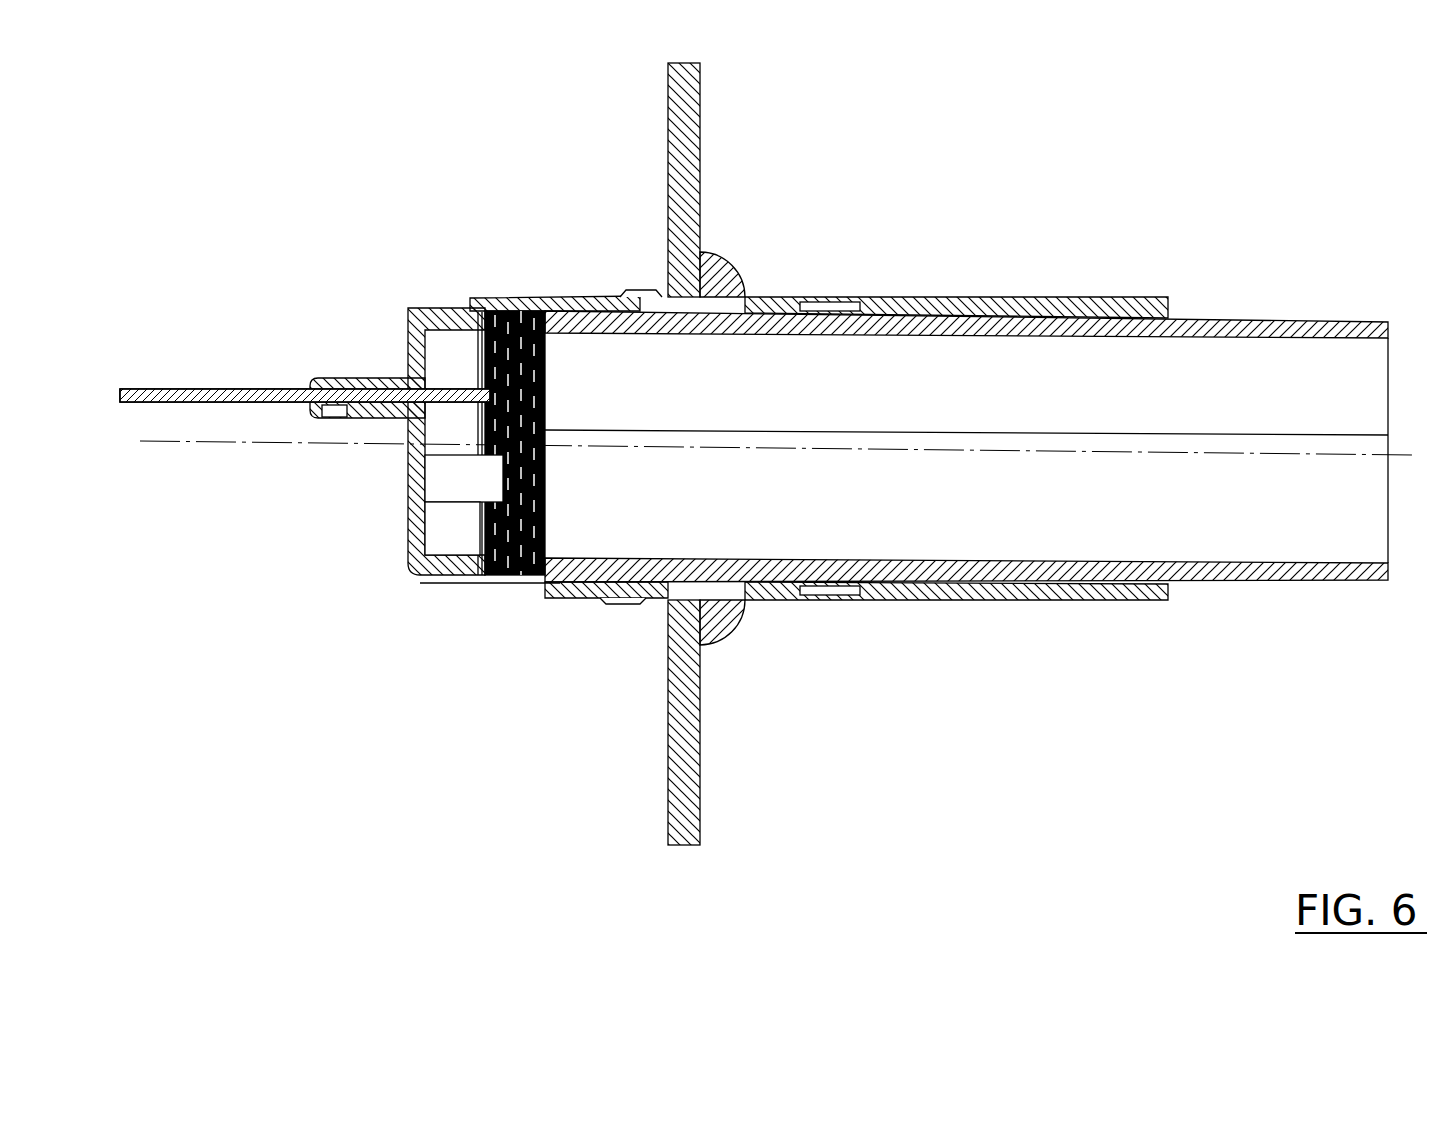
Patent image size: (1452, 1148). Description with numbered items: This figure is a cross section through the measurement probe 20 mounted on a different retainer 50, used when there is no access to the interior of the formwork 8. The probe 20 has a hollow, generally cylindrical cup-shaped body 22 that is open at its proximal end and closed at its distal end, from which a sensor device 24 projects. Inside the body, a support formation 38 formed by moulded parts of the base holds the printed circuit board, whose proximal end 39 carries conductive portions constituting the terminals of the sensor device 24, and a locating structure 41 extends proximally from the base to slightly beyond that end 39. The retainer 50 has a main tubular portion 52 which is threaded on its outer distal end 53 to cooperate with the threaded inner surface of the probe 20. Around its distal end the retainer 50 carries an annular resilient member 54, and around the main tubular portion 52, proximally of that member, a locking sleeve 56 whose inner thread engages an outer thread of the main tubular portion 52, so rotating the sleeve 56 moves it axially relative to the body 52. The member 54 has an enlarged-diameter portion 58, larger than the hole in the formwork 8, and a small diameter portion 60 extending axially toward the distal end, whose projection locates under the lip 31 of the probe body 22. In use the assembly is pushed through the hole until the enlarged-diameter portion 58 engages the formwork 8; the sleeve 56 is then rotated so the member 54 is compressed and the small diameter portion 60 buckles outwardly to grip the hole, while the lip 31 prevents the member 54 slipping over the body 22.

The formwork 8 is at (668, 150).
The measurement probe 20 is at (447, 302).
The cup-shaped body 22 is at (474, 305).
The sensor device 24 is at (200, 388).
The lip 31 is at (632, 604).
The support formation 38 is at (370, 382).
The proximal end 39 is at (410, 432).
The locating structure 41 is at (440, 486).
The retainer 50 is at (1113, 277).
The main tubular portion 52 is at (1228, 322).
The outer distal end 53 is at (565, 300).
The annular resilient member 54 is at (745, 268).
The locking sleeve 56 is at (985, 300).
The enlarged-diameter portion 58 is at (725, 268).
The small diameter portion 60 is at (652, 292).